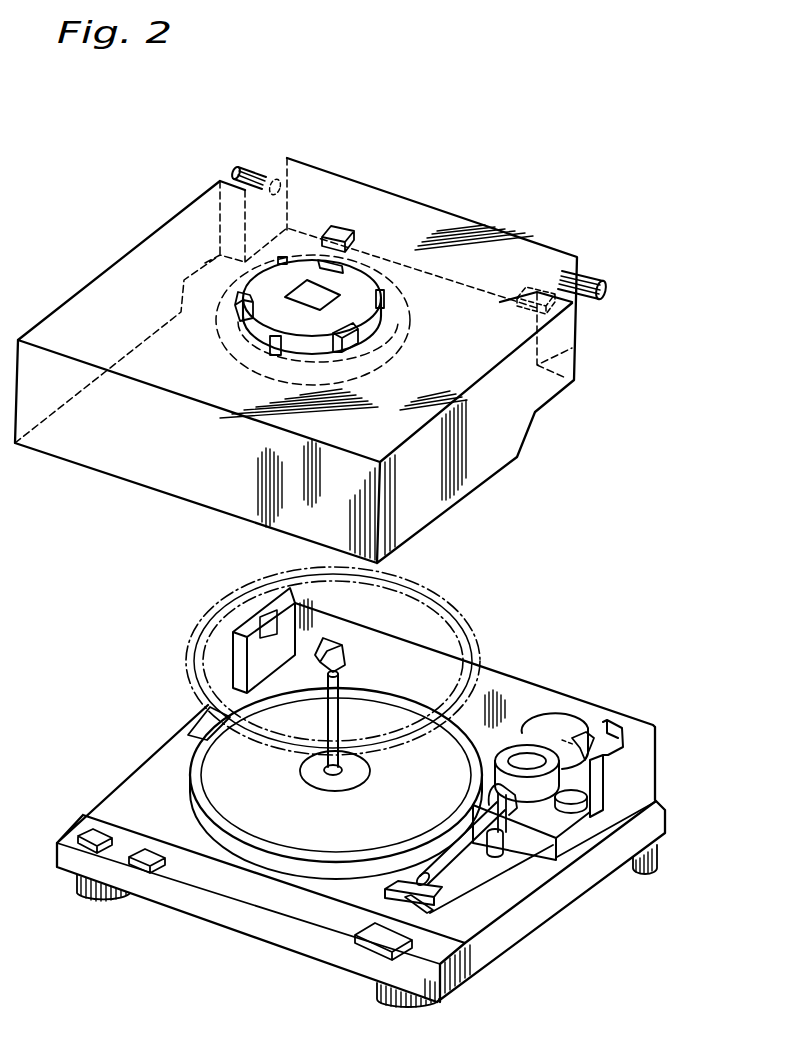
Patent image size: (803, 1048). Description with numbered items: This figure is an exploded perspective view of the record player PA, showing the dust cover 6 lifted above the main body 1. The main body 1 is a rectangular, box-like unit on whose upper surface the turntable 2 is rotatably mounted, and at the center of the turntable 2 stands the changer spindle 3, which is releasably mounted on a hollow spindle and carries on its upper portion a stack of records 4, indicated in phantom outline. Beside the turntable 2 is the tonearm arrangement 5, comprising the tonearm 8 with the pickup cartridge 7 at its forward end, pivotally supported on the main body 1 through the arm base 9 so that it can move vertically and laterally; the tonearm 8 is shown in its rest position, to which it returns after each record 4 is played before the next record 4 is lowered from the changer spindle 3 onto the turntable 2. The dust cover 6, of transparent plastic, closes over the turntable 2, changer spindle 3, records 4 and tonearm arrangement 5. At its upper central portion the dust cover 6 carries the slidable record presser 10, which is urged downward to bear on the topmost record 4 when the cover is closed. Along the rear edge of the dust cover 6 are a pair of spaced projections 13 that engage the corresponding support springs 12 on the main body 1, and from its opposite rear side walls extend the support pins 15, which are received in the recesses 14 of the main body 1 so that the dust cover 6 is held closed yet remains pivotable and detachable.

The record player PA is at (466, 122).
The main body 1 is at (497, 940).
The turntable 2 is at (222, 773).
The changer spindle 3 is at (333, 713).
The records 4 is at (438, 605).
The tonearm arrangement 5 is at (443, 860).
The dust cover 6 is at (493, 450).
The pickup cartridge 7 is at (400, 900).
The tonearm 8 is at (465, 850).
The arm base 9 is at (558, 785).
The record presser 10 is at (355, 283).
The support springs 12 is at (324, 647).
The projections 13 is at (342, 230).
The recesses 14 is at (257, 620).
The support pins 15 is at (241, 167).